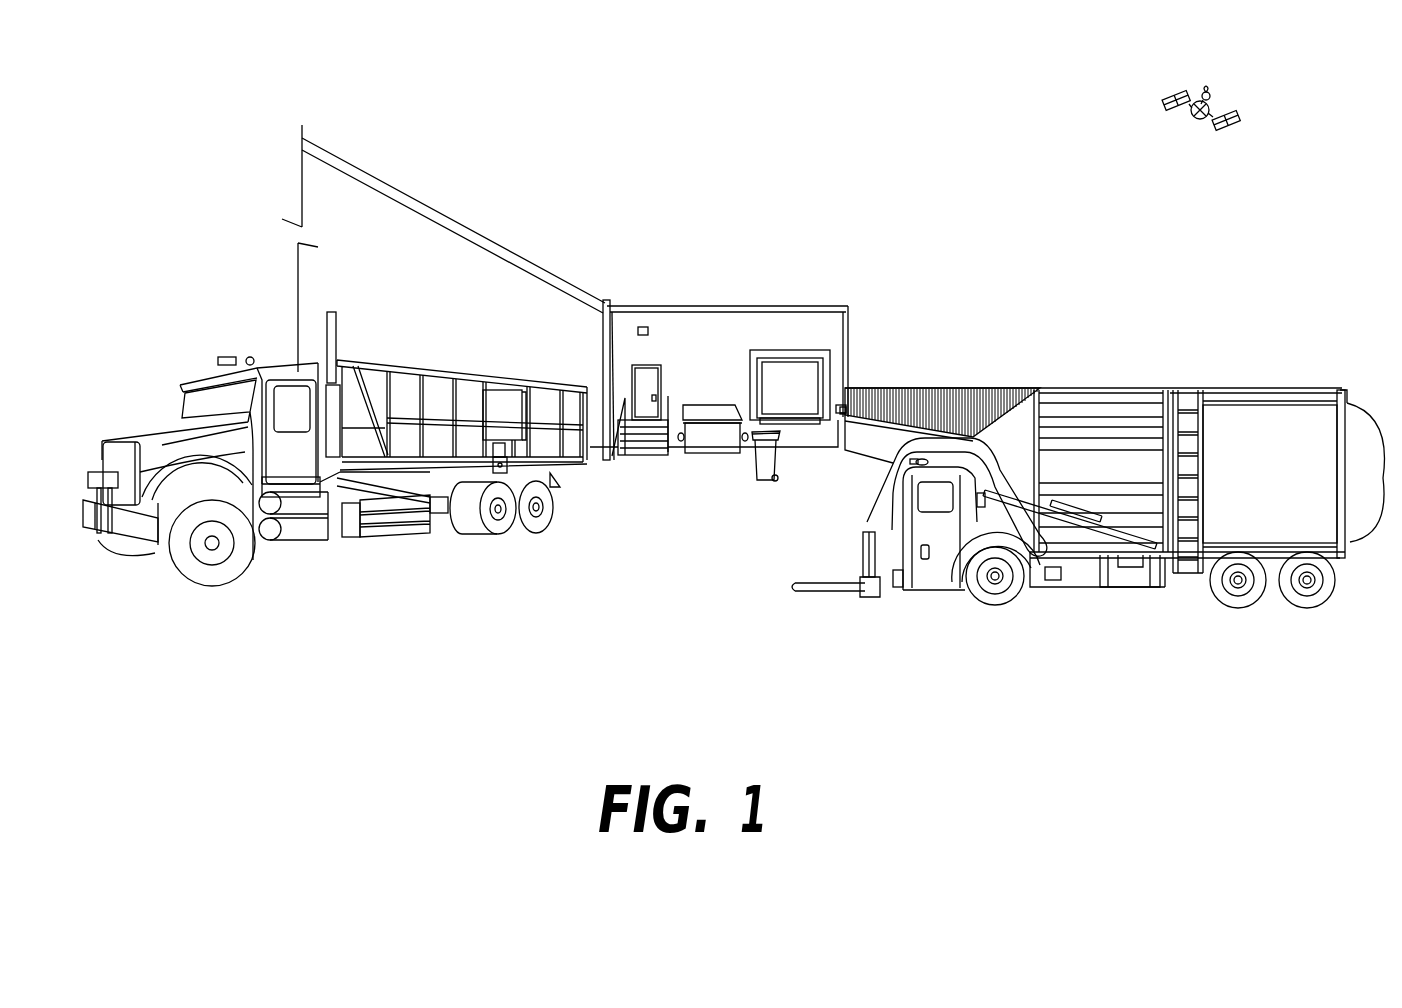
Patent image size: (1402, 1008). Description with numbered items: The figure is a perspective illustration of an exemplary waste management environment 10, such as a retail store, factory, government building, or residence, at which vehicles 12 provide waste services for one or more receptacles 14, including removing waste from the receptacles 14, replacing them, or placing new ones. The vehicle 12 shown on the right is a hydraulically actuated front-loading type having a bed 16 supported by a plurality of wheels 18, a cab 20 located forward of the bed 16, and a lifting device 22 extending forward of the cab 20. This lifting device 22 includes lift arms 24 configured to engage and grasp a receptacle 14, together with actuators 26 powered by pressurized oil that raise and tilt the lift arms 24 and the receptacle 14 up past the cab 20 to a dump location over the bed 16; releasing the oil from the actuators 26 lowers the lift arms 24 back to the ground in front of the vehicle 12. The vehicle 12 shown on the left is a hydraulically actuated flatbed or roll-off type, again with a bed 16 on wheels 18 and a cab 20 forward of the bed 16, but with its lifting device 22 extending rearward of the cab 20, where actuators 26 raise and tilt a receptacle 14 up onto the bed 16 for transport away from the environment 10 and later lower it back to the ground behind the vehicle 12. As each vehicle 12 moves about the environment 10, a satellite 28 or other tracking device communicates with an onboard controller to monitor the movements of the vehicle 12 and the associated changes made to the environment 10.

The waste management environment 10 is at (747, 272).
The vehicle 12 is at (360, 324).
The receptacle 14 is at (757, 470).
The bed 16 is at (1283, 498).
The wheels 18 is at (226, 582).
The cab 20 is at (300, 419).
The lifting device 22 is at (342, 571).
The lift arms 24 is at (888, 495).
The actuators 26 is at (387, 490).
The satellite 28 is at (1192, 118).